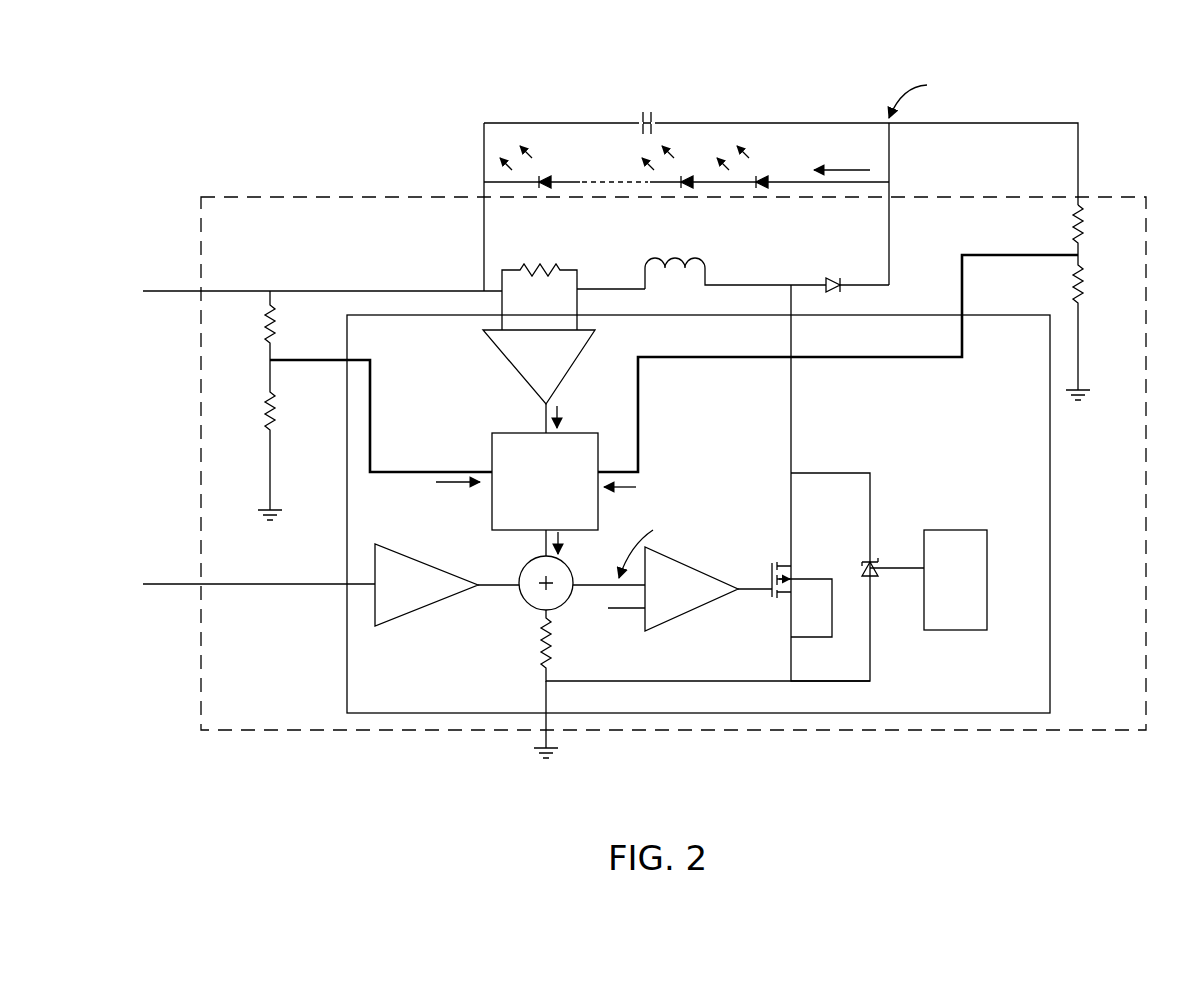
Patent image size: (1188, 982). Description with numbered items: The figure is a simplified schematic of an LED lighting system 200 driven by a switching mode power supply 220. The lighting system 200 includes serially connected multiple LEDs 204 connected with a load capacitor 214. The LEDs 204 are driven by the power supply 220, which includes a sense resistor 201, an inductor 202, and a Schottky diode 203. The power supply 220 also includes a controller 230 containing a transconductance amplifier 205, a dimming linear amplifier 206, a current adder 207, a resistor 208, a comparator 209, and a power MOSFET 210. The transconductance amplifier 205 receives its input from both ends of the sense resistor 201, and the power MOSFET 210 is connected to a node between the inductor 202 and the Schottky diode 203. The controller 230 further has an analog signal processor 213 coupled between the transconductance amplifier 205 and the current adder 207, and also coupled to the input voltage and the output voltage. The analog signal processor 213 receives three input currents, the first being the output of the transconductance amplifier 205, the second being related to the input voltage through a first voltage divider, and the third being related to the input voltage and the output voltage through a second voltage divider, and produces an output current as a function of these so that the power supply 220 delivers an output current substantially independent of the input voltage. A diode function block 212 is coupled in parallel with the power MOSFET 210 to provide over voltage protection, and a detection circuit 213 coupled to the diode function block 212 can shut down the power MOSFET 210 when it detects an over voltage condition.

The LED lighting system 200 is at (1094, 96).
The switching mode power supply 220 is at (297, 195).
The controller 230 is at (698, 514).
The load capacitor 214 is at (641, 116).
The LEDs 204 is at (545, 180).
The sense resistor 201 is at (526, 252).
The inductor 202 is at (661, 243).
The Schottky diode 203 is at (826, 258).
The transconductance amplifier 205 is at (502, 390).
The analog signal processor 213 is at (488, 451).
The Dim linear amplifier 206 is at (440, 553).
The current adder 207 is at (640, 524).
The resistor 208 is at (532, 655).
The comparator 209 is at (703, 572).
The power MOSFET 210 is at (802, 560).
The diode function block 212 is at (895, 545).